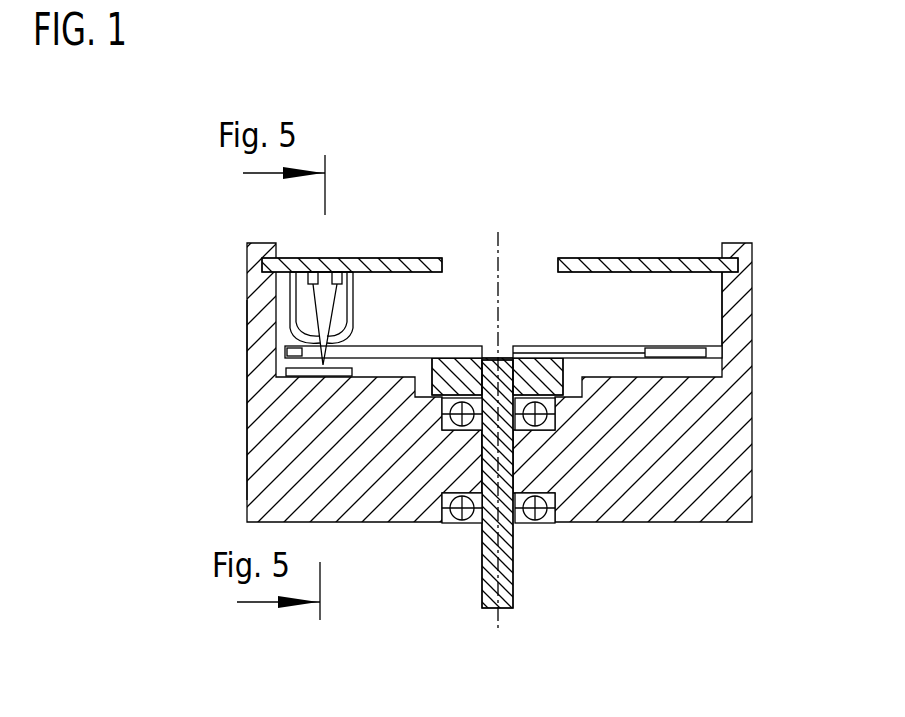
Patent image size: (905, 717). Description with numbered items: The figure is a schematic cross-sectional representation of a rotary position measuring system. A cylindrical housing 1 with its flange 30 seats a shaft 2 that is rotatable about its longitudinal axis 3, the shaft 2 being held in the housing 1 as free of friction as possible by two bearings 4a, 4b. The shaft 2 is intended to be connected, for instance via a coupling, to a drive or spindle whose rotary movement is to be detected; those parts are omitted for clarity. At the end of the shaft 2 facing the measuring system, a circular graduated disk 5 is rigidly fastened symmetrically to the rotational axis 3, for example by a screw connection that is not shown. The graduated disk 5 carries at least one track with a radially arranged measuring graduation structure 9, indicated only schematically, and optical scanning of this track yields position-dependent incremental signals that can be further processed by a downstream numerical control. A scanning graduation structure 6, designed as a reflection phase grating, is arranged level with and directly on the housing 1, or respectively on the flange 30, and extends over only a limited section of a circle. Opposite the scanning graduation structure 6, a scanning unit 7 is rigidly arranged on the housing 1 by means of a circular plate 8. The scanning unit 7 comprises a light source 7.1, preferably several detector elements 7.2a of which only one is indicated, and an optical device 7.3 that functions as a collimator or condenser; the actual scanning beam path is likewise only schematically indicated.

The housing 1 is at (259, 492).
The shaft 2 is at (512, 565).
The longitudinal axis 3 is at (496, 618).
The bearing 4a is at (437, 523).
The bearing 4b is at (552, 425).
The graduated disk 5 is at (708, 348).
The scanning graduation structure 6 is at (247, 426).
The scanning unit 7 is at (293, 300).
The light source 7.1 is at (305, 258).
The detector element 7.2a is at (335, 258).
The optical device 7.3 is at (275, 343).
The circular plate 8 is at (430, 258).
The measuring graduation structure 9 is at (247, 375).
The flange 30 is at (372, 374).